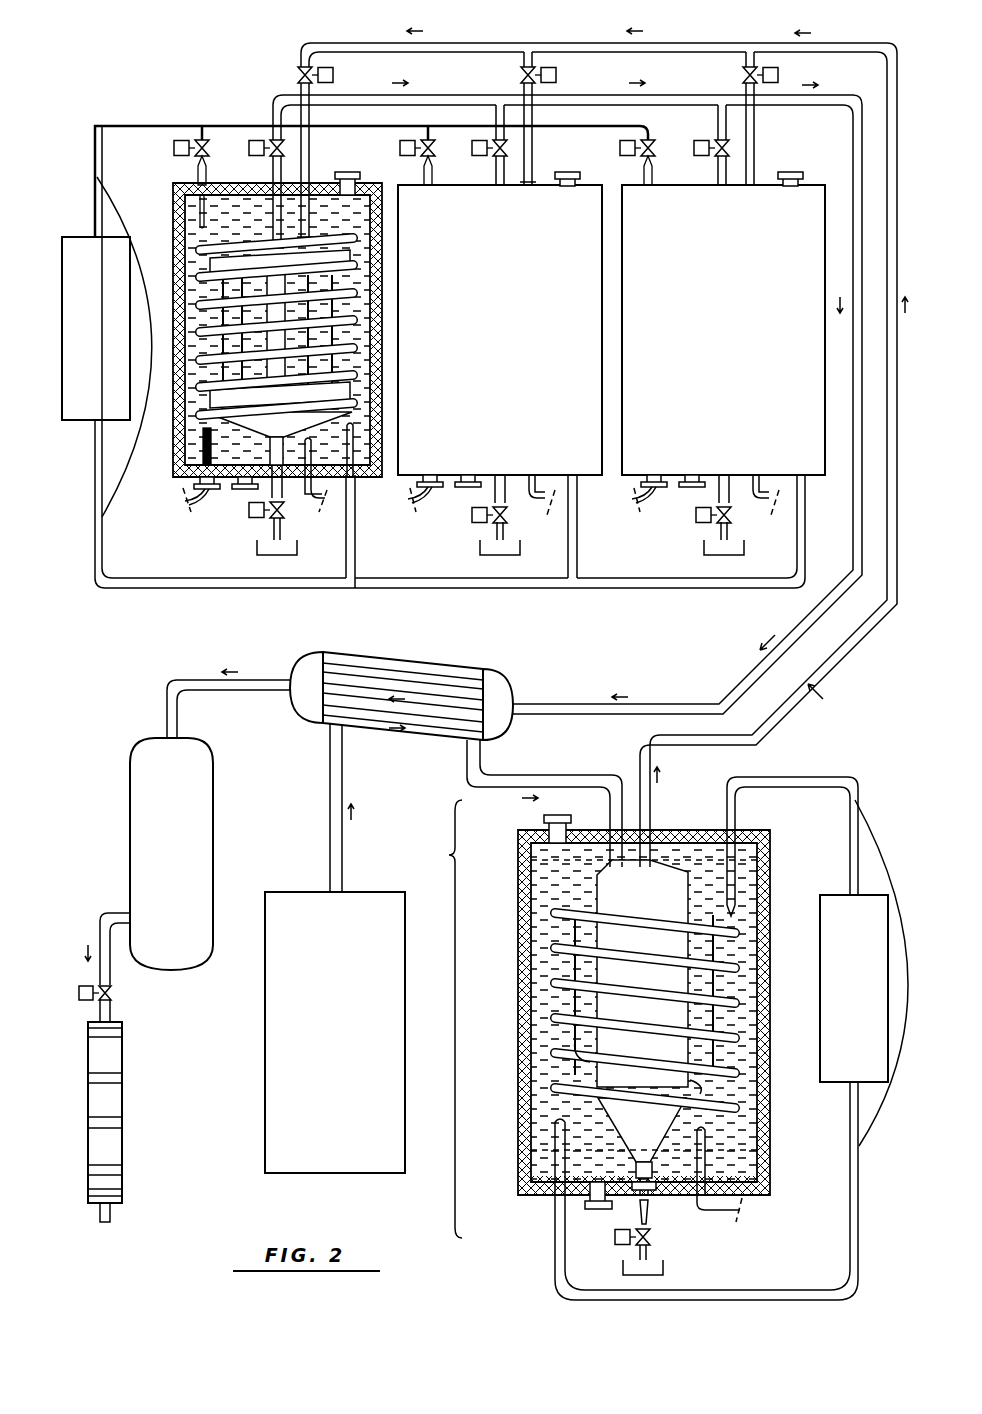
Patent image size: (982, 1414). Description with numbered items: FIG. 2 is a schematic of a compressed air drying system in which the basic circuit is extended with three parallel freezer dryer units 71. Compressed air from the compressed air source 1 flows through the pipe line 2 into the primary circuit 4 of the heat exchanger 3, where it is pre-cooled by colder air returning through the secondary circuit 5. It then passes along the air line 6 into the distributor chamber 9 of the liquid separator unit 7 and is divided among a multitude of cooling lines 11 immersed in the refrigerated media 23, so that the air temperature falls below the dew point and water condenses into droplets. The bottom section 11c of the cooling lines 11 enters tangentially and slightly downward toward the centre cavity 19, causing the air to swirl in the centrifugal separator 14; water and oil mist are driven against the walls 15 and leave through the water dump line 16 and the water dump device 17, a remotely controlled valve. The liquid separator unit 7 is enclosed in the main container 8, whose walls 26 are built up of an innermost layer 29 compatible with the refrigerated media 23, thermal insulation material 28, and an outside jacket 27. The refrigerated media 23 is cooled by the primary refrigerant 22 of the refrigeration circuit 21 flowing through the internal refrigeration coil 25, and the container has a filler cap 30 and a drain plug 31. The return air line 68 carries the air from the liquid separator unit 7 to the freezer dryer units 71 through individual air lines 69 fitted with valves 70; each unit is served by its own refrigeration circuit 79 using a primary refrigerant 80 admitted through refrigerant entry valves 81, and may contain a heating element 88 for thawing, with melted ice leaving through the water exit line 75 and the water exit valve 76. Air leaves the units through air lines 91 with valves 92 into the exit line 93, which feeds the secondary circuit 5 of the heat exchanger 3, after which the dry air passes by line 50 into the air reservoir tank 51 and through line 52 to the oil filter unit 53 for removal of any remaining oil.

The compressed air source 1 is at (326, 1038).
The pipe line 2 is at (330, 857).
The heat exchanger 3 is at (298, 722).
The primary circuit 4 is at (375, 725).
The secondary circuit 5 is at (426, 698).
The air line 6 is at (560, 775).
The liquid separator unit 7 is at (653, 1050).
The main container 8 is at (524, 910).
The distributor chamber 9 is at (560, 866).
The cooling lines 11 is at (560, 960).
The bottom section 11c is at (690, 1082).
The centrifugal separator 14 is at (631, 1136).
The walls 15 is at (620, 1137).
The water dump line 16 is at (650, 1205).
The water dump device 17 is at (662, 1247).
The centre cavity 19 is at (631, 914).
The refrigeration circuit 21 is at (853, 932).
The primary refrigerant 22 is at (800, 777).
The refrigerated media 23 is at (560, 1020).
The internal refrigeration coil 25 is at (585, 1050).
The walls 26 is at (806, 1105).
The outside jacket 27 is at (771, 1117).
The thermal insulation material 28 is at (760, 1141).
The innermost layer 29 is at (763, 1165).
The filler cap 30 is at (552, 818).
The drain plug 31 is at (596, 1205).
The gas line 50 is at (170, 678).
The air reservoir tank 51 is at (161, 851).
The discharge line 52 is at (106, 918).
The oil filter unit 53 is at (105, 1102).
The return air line 68 is at (834, 652).
The air lines 69 is at (312, 160).
The valves 70 is at (300, 70).
The freezer dryer units 71 is at (488, 329).
The water exit line 75 is at (280, 500).
The water exit valve 76 is at (240, 518).
The refrigeration circuit 79 is at (100, 392).
The primary refrigerant 80 is at (140, 126).
The refrigerant entry valves 81 is at (180, 152).
The heating element 88 is at (200, 452).
The air lines 91 is at (278, 100).
The valves 92 is at (256, 152).
The exit line 93 is at (676, 703).